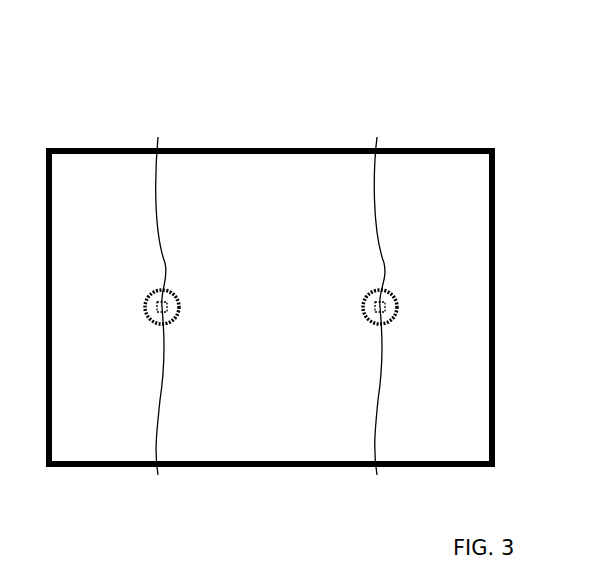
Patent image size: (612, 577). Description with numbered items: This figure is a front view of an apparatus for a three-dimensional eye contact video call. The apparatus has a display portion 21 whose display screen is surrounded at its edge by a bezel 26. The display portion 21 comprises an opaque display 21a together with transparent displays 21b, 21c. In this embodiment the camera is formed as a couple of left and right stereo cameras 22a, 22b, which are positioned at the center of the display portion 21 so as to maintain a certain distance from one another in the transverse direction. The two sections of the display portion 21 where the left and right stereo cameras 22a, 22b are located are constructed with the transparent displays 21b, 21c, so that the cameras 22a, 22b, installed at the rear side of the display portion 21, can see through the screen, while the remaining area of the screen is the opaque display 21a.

The display portion 21 is at (378, 105).
The opaque display 21a is at (88, 193).
The transparent display 21b is at (157, 293).
The transparent display 21c is at (376, 293).
The left stereo camera 22a is at (158, 399).
The right stereo camera 22b is at (377, 399).
The bezel 26 is at (495, 197).